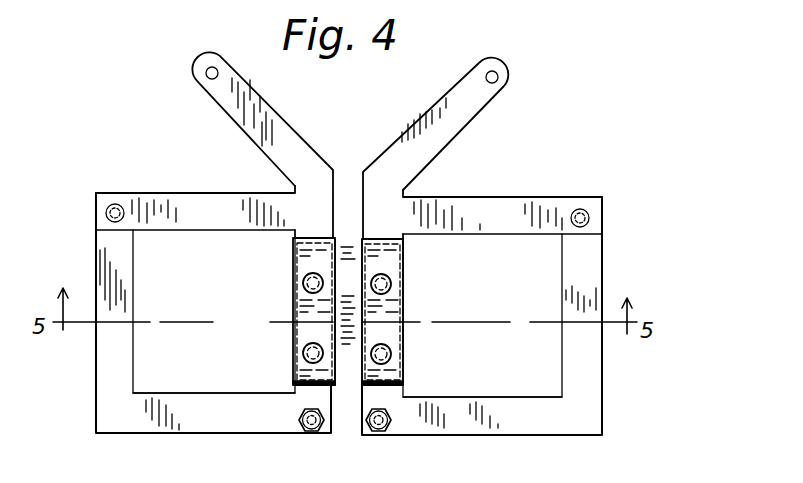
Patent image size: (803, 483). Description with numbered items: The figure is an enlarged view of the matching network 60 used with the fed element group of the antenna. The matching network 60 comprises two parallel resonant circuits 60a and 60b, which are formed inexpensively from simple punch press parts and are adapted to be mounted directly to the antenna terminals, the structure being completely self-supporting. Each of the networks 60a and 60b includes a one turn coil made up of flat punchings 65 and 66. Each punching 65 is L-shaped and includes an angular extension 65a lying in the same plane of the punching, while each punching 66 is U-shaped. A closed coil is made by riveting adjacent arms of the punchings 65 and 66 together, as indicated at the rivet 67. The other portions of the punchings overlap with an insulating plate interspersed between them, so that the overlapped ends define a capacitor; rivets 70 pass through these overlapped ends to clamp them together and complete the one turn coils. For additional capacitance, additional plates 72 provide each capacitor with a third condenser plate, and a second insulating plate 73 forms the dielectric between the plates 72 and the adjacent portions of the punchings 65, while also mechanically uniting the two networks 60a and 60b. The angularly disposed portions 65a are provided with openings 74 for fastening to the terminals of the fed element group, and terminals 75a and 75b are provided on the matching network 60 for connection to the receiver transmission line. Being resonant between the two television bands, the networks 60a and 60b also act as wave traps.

The matching network 60 is at (92, 252).
The parallel resonant circuit 60a is at (532, 296).
The parallel resonant circuit 60b is at (228, 290).
The L-shaped punching 65 is at (183, 200).
The angular extension 65a is at (278, 114).
The U-shaped punching 66 is at (180, 404).
The rivet 67 is at (114, 204).
The rivet 70 is at (302, 285).
The additional plate 72 is at (312, 258).
The second insulating plate 73 is at (350, 376).
The opening 74 is at (206, 76).
The terminal 75a is at (390, 430).
The terminal 75b is at (313, 434).